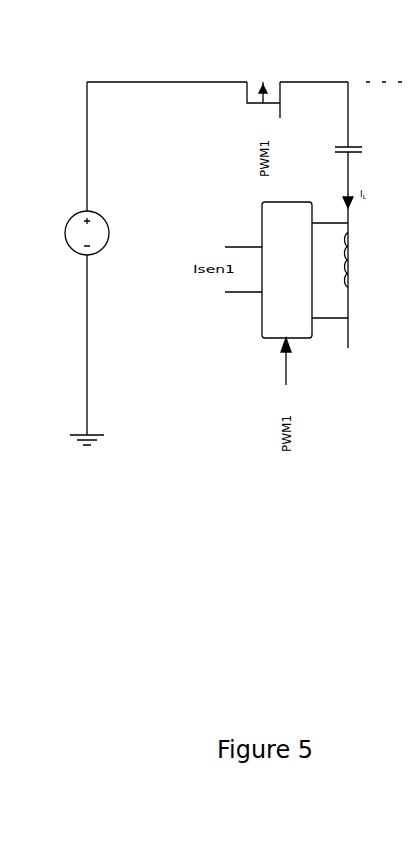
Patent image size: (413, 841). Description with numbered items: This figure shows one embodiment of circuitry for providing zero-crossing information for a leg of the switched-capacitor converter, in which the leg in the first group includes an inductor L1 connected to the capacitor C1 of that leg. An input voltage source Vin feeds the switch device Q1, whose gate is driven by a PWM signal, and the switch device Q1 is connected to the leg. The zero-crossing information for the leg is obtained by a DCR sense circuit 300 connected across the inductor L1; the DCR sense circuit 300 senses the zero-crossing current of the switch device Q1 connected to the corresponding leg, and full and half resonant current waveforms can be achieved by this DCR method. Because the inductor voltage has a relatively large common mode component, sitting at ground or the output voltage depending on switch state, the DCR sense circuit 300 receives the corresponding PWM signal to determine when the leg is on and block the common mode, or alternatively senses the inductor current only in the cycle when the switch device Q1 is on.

The DCR sense circuit 300 is at (261, 202).
The switch device Q1 is at (263, 84).
The capacitor C1 is at (361, 215).
The inductor L1 is at (361, 260).
The input voltage source Vin is at (74, 233).